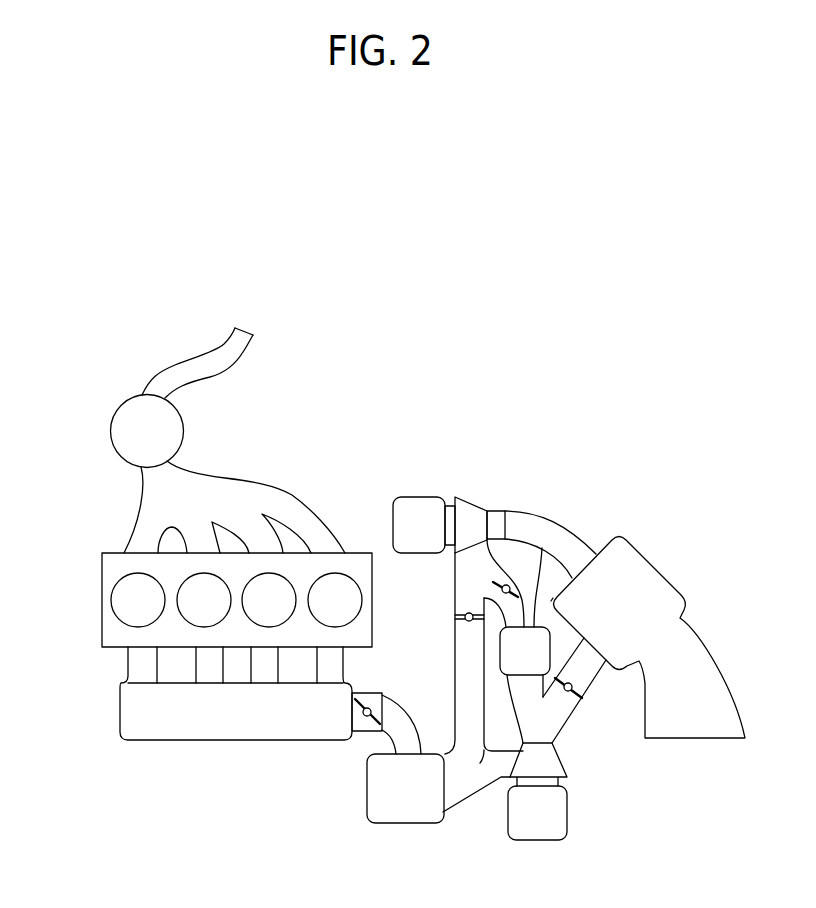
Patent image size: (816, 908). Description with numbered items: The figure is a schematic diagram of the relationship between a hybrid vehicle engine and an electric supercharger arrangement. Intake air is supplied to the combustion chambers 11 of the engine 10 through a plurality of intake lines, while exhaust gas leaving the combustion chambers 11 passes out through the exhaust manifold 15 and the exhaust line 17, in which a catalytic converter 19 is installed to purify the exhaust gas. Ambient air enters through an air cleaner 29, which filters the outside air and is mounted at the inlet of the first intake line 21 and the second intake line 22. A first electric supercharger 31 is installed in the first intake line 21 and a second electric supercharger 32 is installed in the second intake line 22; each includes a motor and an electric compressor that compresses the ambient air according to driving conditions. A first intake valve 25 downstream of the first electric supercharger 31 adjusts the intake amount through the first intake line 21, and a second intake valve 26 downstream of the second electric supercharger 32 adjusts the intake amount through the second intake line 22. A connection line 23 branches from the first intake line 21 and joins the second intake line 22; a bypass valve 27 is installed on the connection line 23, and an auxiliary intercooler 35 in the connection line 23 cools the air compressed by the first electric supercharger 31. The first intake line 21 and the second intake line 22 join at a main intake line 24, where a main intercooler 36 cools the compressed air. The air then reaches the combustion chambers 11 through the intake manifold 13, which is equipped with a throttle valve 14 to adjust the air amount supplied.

The engine 10 is at (86, 653).
The combustion chamber 11 is at (110, 603).
The intake manifold 13 is at (120, 714).
The throttle valve 14 is at (372, 693).
The exhaust manifold 15 is at (131, 536).
The exhaust line 17 is at (190, 360).
The catalytic converter 19 is at (110, 431).
The first intake line 21 is at (540, 518).
The second intake line 22 is at (596, 680).
The connection line 23 is at (513, 707).
The main intake line 24 is at (390, 742).
The first intake valve 25 is at (463, 616).
The second intake valve 26 is at (576, 698).
The bypass valve 27 is at (502, 580).
The air cleaner 29 is at (661, 562).
The first electric supercharger 31 is at (395, 477).
The second electric supercharger 32 is at (586, 826).
The auxiliary intercooler 35 is at (552, 600).
The main intercooler 36 is at (405, 823).